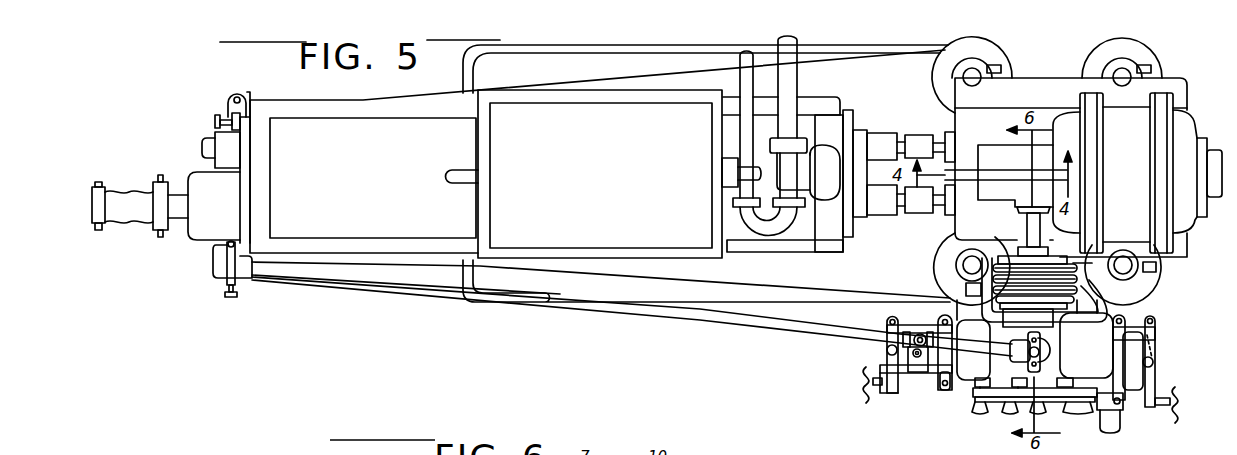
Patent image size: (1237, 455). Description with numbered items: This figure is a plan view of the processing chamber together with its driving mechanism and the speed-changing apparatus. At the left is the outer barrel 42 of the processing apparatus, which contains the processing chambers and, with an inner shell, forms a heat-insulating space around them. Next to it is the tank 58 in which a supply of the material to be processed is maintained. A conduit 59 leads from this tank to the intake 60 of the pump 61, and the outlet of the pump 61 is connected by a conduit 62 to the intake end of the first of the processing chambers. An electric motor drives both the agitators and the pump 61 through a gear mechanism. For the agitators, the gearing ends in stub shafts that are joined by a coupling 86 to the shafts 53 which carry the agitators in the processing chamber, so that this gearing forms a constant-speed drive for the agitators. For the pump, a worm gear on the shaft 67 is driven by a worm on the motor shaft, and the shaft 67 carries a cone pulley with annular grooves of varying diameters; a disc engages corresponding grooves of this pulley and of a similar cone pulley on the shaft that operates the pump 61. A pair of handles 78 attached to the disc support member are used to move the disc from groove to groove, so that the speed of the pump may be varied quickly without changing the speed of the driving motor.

The outer barrel 42 is at (597, 151).
The tank 58 is at (600, 174).
The conduit 59 is at (727, 160).
The shafts 53 is at (900, 140).
The coupling 86 is at (915, 135).
The shaft 67 is at (1024, 227).
The handles 78 is at (1078, 289).
The conduit 62 is at (777, 322).
The pump 61 is at (1010, 407).
The intake 60 is at (1120, 424).